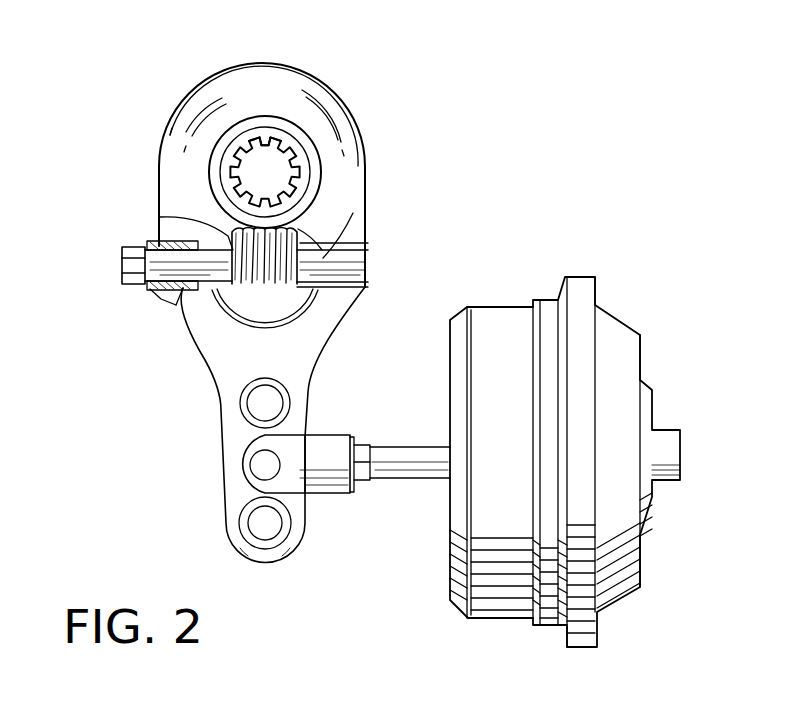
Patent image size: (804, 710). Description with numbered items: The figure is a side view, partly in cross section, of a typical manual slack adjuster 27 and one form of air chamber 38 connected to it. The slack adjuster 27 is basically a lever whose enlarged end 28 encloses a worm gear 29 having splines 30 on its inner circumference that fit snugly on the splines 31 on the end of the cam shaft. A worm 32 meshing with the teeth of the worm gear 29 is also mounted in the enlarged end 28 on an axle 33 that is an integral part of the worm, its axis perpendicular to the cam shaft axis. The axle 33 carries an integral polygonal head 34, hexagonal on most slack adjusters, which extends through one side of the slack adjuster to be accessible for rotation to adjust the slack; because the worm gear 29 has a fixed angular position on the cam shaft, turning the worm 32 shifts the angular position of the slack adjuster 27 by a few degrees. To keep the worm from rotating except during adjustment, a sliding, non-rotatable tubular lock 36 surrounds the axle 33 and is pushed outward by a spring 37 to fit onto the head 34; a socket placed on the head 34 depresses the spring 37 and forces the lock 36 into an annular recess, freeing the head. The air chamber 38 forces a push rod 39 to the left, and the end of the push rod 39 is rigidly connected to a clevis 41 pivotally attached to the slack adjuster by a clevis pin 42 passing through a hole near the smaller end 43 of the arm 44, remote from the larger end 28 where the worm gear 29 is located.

The slack adjuster 27 is at (364, 129).
The enlarged end 28 is at (170, 116).
The worm gear 29 is at (210, 177).
The splines 30 is at (273, 138).
The splines 31 is at (257, 138).
The worm 32 is at (345, 246).
The axle 33 is at (162, 219).
The polygonal head 34 is at (122, 265).
The tubular lock 36 is at (148, 292).
The spring 37 is at (176, 306).
The air chamber 38 is at (597, 307).
The push rod 39 is at (413, 478).
The clevis 41 is at (333, 492).
The clevis pin 42 is at (268, 466).
The smaller end 43 is at (218, 406).
The arm 44 is at (266, 565).